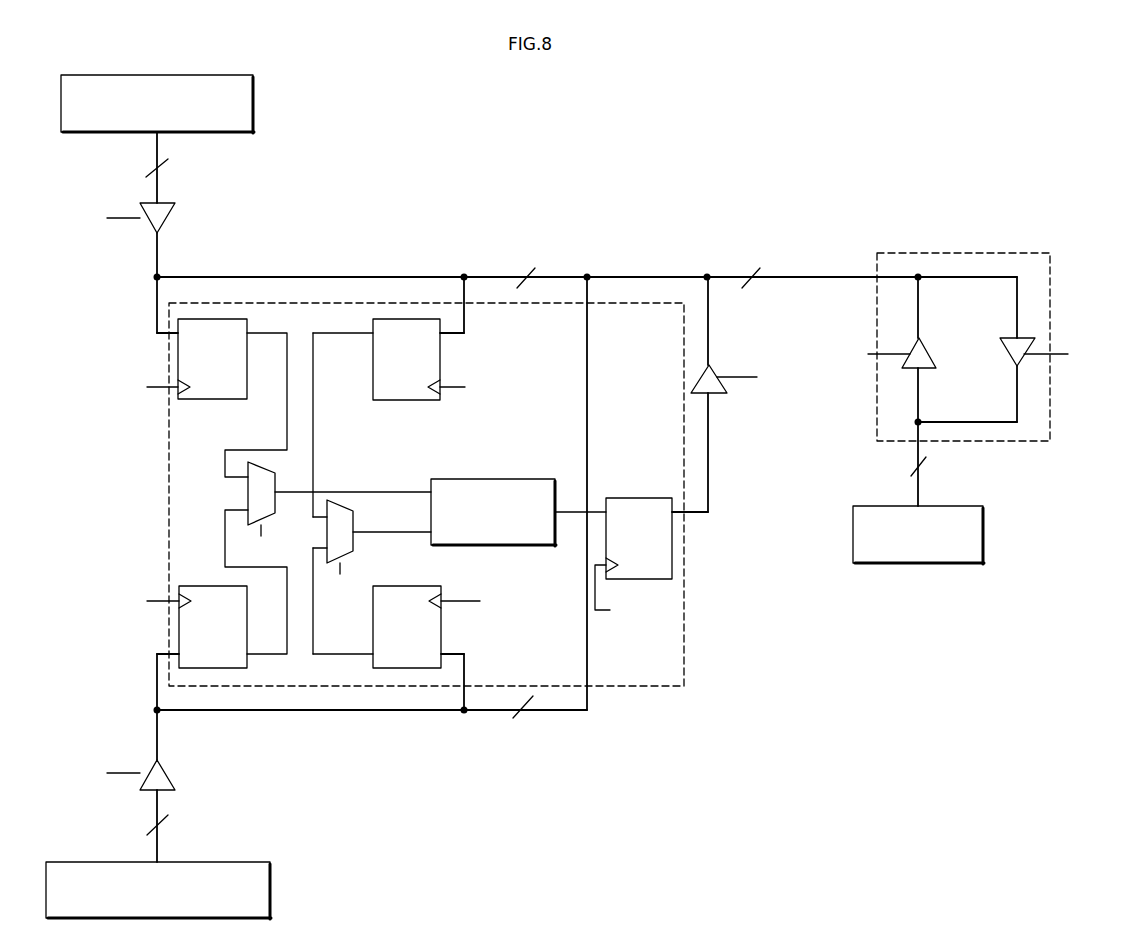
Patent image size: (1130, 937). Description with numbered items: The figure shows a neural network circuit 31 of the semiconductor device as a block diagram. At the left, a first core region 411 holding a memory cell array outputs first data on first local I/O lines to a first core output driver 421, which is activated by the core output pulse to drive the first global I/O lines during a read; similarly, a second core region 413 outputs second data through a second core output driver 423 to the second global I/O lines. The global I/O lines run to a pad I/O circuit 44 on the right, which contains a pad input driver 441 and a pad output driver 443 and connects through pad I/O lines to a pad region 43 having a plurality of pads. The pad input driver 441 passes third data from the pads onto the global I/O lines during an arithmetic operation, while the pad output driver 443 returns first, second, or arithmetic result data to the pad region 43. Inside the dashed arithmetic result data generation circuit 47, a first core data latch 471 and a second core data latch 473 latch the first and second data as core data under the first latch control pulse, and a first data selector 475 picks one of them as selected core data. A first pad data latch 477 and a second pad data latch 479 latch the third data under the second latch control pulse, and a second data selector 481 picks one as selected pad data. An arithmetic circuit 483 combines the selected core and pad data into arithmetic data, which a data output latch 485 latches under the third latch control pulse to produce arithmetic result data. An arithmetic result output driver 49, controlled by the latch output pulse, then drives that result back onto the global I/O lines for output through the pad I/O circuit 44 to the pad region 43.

The neural network circuit 31 is at (1046, 87).
The first core region 411 is at (253, 100).
The second core region 413 is at (270, 888).
The first core output driver 421 is at (168, 222).
The second core output driver 423 is at (170, 768).
The arithmetic result data generation circuit 47 is at (684, 641).
The first core data latch 471 is at (197, 400).
The second core data latch 473 is at (197, 586).
The first data selector 475 is at (255, 461).
The first pad data latch 477 is at (403, 400).
The second pad data latch 479 is at (410, 586).
The second data selector 481 is at (338, 500).
The arithmetic circuit 483 is at (488, 479).
The data output latch 485 is at (639, 498).
The arithmetic result output driver 49 is at (715, 372).
The pad I/O circuit 44 is at (973, 379).
The pad input driver 441 is at (930, 352).
The pad output driver 443 is at (1008, 355).
The pad region 43 is at (983, 535).